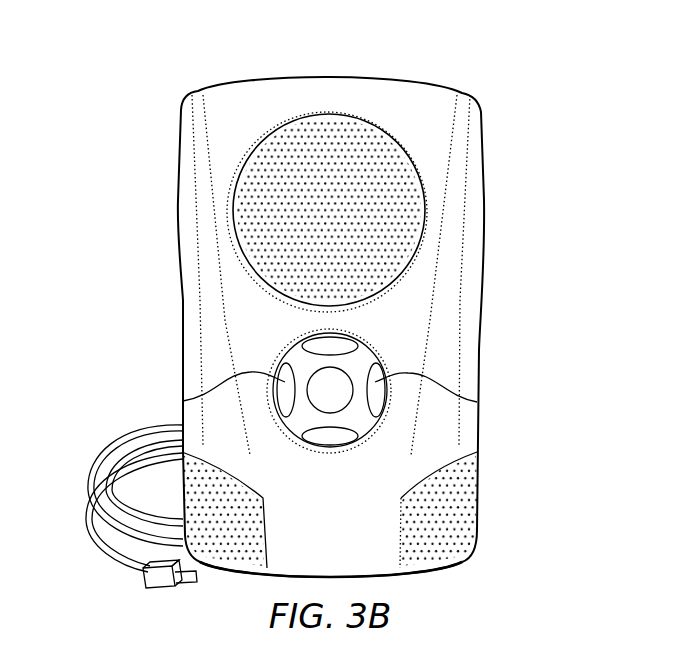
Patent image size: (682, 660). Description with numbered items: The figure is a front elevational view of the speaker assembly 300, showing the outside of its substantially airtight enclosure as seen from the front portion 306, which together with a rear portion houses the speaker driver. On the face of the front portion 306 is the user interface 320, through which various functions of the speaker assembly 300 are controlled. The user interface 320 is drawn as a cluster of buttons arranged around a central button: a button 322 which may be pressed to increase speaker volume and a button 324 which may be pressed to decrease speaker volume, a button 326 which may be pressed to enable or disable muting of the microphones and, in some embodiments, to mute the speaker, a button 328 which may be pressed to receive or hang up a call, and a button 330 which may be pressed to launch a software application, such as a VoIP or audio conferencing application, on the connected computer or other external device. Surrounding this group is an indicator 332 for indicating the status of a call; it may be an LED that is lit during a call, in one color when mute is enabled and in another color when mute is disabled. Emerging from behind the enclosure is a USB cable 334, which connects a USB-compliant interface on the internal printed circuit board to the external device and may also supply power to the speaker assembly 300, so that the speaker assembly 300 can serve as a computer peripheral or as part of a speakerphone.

The speaker assembly 300 is at (282, 301).
The front portion 306 is at (237, 102).
The user interface 320 is at (329, 416).
The button 322 is at (323, 345).
The button 324 is at (322, 438).
The button 326 is at (333, 405).
The button 328 is at (477, 402).
The button 330 is at (183, 401).
The indicator 332 is at (377, 347).
The USB cable 334 is at (90, 540).